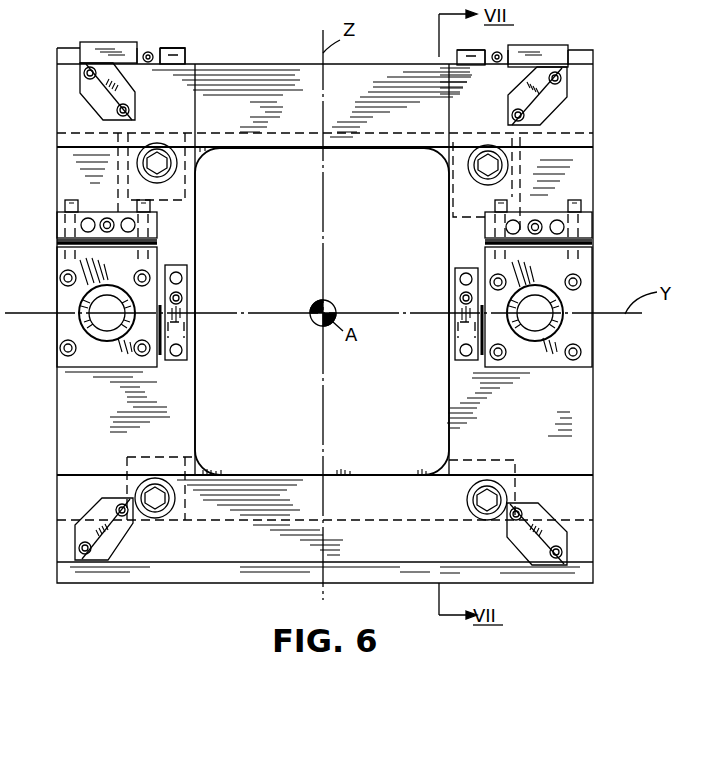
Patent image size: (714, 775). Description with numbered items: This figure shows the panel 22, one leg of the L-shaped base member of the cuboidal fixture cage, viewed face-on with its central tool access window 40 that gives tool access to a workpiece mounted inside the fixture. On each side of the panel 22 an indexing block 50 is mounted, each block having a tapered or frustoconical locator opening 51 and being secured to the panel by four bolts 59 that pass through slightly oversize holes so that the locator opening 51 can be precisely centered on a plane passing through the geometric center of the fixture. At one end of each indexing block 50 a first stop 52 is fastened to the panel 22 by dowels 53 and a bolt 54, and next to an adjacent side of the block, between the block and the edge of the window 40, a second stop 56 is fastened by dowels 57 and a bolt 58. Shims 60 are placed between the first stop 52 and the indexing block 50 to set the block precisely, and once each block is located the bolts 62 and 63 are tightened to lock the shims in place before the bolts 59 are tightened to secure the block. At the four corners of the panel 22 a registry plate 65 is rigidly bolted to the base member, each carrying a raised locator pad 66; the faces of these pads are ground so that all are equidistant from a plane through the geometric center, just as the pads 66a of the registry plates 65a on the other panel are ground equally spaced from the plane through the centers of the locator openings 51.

The panel 22 is at (601, 137).
The tool access window 40 is at (203, 397).
The indexing block 50 is at (67, 296).
The locator opening 51 is at (80, 322).
The first stop 52 is at (592, 224).
The dowel 53 is at (508, 227).
The bolt 54 is at (537, 213).
The second stop 56 is at (472, 363).
The dowel 57 is at (462, 275).
The bolt 58 is at (460, 297).
The bolt 59 is at (580, 284).
The shim 60 is at (595, 247).
The bolt 62 is at (580, 205).
The bolt 63 is at (455, 325).
The registry plate 65 is at (80, 88).
The registry plate 65a is at (122, 48).
The locator pad 66 is at (97, 107).
The locator pad 66a is at (100, 42).